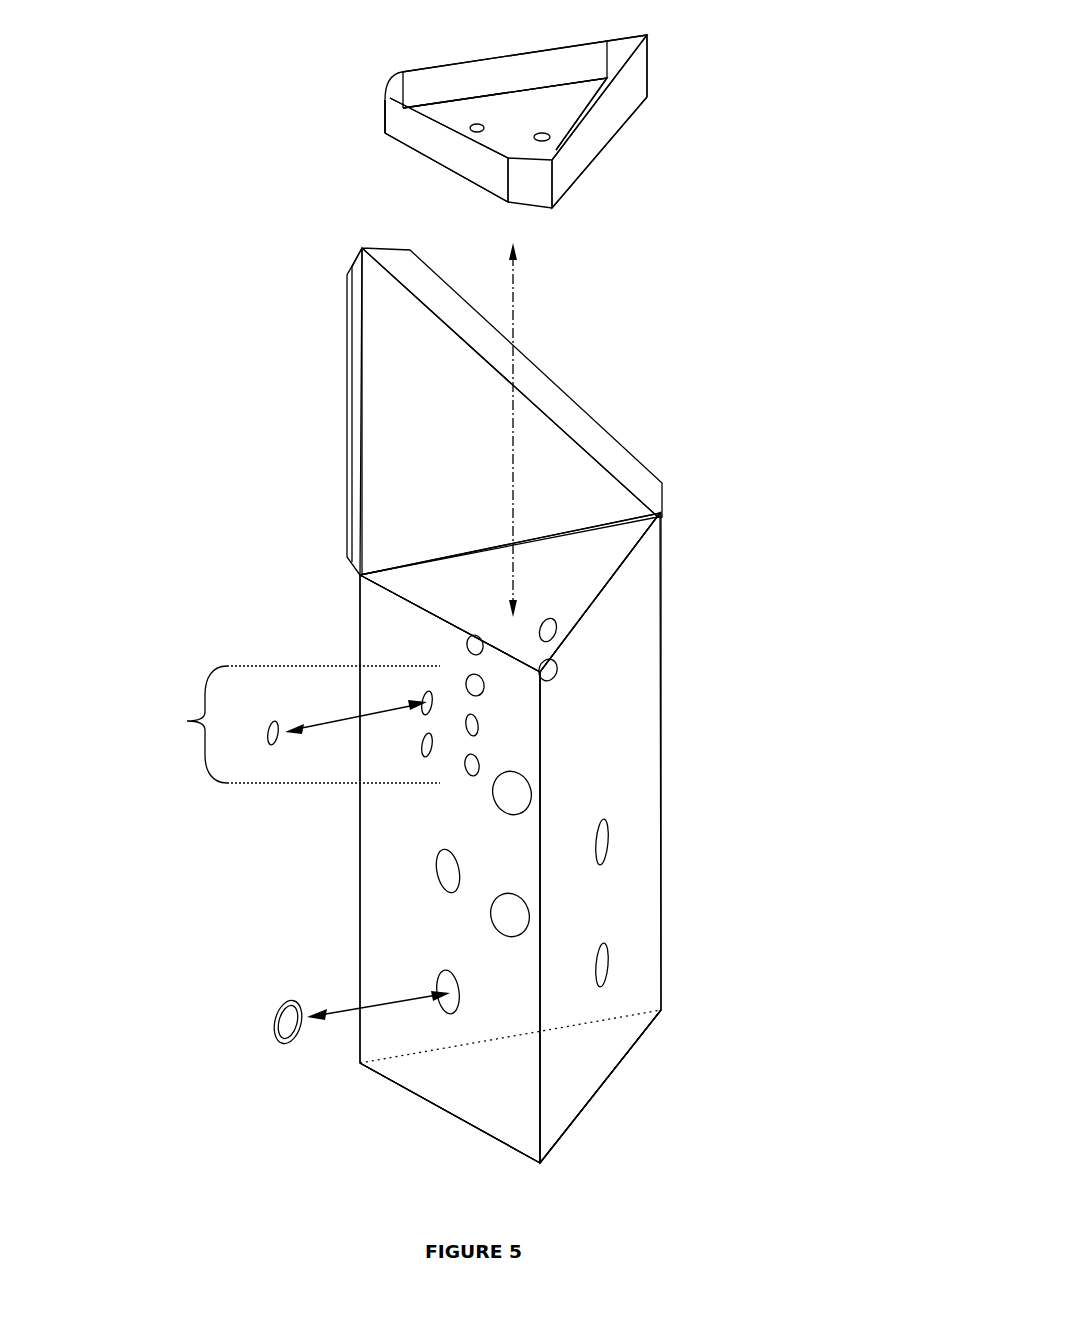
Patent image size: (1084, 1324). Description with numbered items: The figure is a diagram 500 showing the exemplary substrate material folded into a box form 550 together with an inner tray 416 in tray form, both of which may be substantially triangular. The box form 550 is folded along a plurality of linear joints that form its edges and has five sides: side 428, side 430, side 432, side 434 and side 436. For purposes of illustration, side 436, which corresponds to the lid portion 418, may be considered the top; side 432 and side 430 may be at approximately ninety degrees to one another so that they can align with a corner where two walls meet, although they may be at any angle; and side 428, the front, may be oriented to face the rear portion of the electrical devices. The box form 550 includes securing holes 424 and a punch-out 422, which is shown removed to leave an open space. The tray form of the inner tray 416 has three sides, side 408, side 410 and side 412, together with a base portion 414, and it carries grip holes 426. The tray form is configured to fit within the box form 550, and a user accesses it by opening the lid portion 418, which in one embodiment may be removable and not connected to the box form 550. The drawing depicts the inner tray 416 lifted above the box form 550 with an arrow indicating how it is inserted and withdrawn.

The side 408 is at (530, 78).
The side 410 is at (607, 122).
The side 412 is at (440, 153).
The base portion 414 is at (507, 130).
The inner tray 416 is at (645, 59).
The lid portion 418 is at (539, 431).
The punch-out 422 is at (270, 1027).
The securing holes 424 is at (187, 721).
The grip holes 426 is at (478, 128).
The side 428 is at (607, 722).
The side 430 is at (390, 917).
The side 432 is at (440, 600).
The side 434 is at (587, 1107).
The side 436 is at (550, 497).
The diagram 500 is at (795, 58).
The box form 550 is at (714, 565).